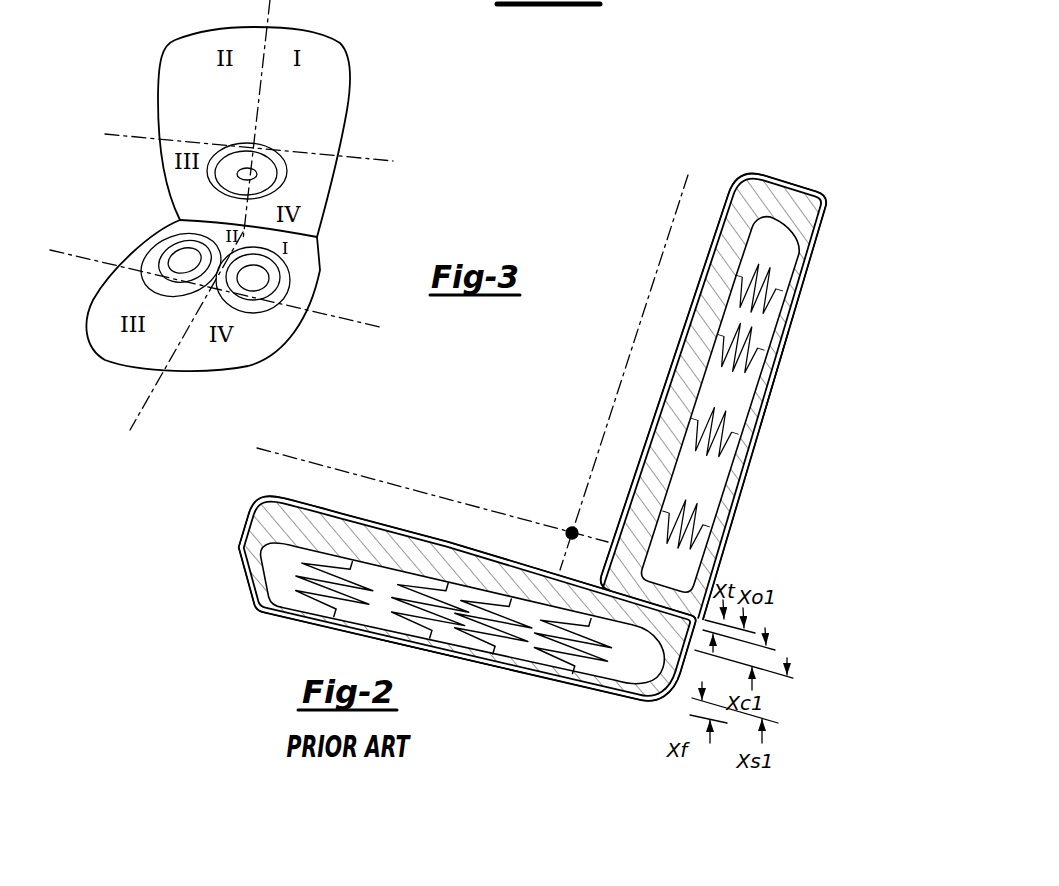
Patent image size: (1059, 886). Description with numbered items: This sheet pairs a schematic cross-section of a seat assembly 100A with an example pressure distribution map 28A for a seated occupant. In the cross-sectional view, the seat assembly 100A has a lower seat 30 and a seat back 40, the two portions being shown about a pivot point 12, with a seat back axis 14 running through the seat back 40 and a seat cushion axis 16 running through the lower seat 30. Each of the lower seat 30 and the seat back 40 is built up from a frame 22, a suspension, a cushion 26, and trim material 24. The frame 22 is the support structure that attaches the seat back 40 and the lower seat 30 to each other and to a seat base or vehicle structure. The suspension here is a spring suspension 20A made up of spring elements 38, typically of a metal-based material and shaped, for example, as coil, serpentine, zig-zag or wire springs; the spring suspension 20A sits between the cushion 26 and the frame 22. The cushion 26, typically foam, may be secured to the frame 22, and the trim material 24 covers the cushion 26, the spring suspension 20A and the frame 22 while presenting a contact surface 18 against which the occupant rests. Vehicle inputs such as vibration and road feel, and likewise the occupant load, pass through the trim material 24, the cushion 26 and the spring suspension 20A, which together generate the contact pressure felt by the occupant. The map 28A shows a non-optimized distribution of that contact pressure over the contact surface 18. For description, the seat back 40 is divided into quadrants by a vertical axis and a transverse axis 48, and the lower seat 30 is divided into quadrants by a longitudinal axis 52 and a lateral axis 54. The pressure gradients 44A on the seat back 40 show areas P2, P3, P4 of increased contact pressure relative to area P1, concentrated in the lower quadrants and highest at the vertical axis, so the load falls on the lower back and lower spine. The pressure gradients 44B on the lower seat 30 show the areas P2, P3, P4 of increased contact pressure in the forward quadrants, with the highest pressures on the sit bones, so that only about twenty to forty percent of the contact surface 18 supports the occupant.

In FIG. 2, the pivot point 12 is at (570, 528).
In FIG. 3, the seat back axis 14 is at (670, 227).
In FIG. 2, the seat cushion axis 16 is at (343, 472).
In FIG. 3, the contact surface 18 is at (180, 67).
In FIG. 2, the contact surface 18 is at (430, 540).
In FIG. 3, the spring suspension 20A is at (737, 405).
In FIG. 2, the spring suspension 20A is at (368, 609).
In FIG. 3, the frame 22 is at (782, 345).
In FIG. 2, the frame 22 is at (583, 683).
In FIG. 3, the trim material 24 is at (787, 182).
In FIG. 2, the trim material 24 is at (240, 582).
In FIG. 3, the cushion 26 is at (750, 190).
In FIG. 2, the cushion 26 is at (270, 513).
In FIG. 3, the pressure distribution map 28A is at (399, 74).
In FIG. 2, the lower seat 30 is at (230, 535).
In FIG. 3, the spring elements 38 is at (723, 440).
In FIG. 2, the spring elements 38 is at (447, 620).
In FIG. 3, the seat back 40 is at (800, 420).
In FIG. 3, the pressure gradients 44A is at (292, 183).
In FIG. 3, the pressure gradients 44B is at (152, 241).
In FIG. 3, the transverse axis 48 is at (130, 133).
In FIG. 3, the longitudinal axis 52 is at (137, 413).
In FIG. 3, the lateral axis 54 is at (73, 257).
In FIG. 3, the seat assembly 100A is at (835, 194).
In FIG. 3, the area P1 is at (183, 177).
In FIG. 3, the area of increased contact pressure P2 is at (232, 147).
In FIG. 3, the area of increased contact pressure P3 is at (247, 147).
In FIG. 3, the area of increased contact pressure P4 is at (240, 170).